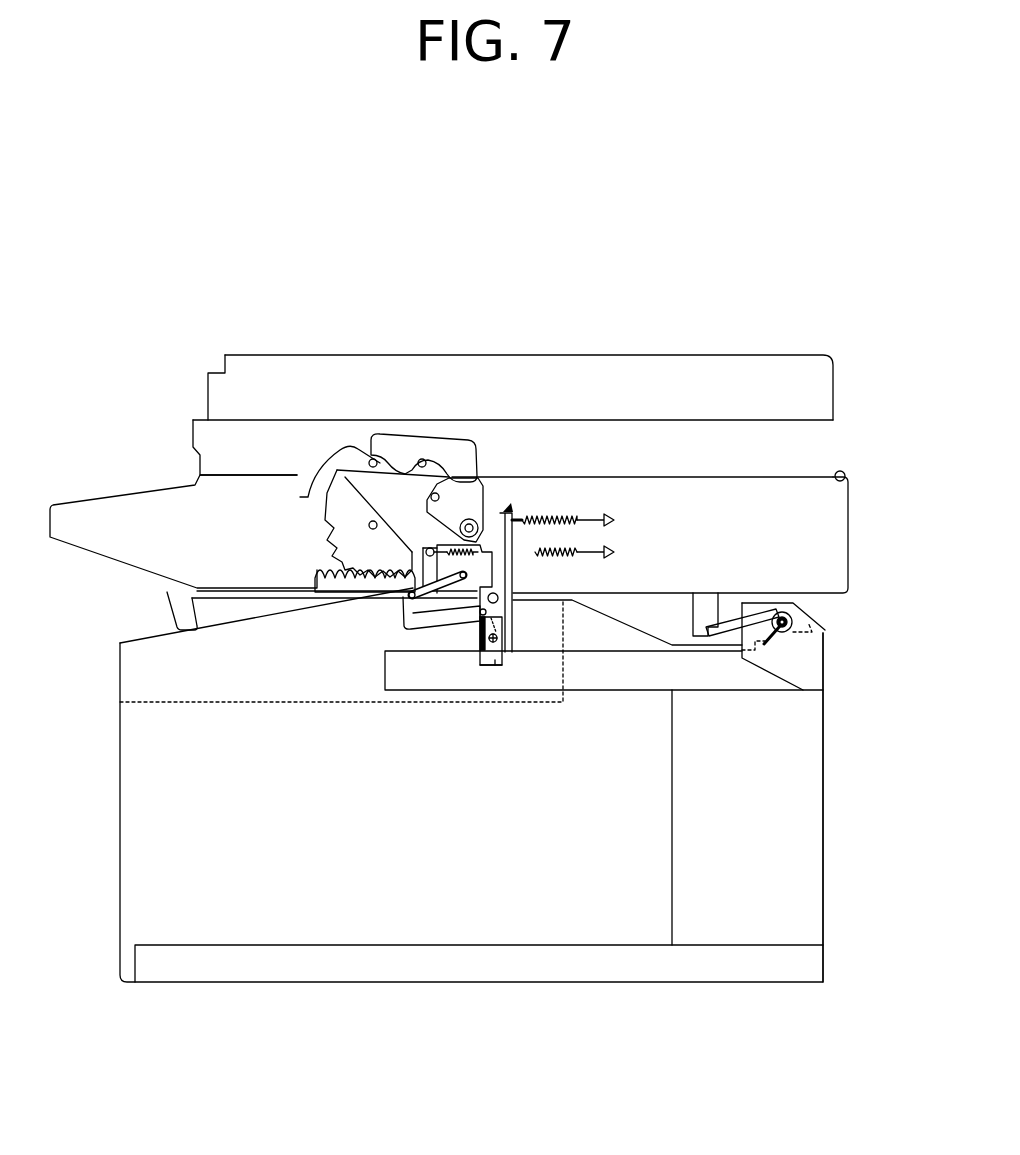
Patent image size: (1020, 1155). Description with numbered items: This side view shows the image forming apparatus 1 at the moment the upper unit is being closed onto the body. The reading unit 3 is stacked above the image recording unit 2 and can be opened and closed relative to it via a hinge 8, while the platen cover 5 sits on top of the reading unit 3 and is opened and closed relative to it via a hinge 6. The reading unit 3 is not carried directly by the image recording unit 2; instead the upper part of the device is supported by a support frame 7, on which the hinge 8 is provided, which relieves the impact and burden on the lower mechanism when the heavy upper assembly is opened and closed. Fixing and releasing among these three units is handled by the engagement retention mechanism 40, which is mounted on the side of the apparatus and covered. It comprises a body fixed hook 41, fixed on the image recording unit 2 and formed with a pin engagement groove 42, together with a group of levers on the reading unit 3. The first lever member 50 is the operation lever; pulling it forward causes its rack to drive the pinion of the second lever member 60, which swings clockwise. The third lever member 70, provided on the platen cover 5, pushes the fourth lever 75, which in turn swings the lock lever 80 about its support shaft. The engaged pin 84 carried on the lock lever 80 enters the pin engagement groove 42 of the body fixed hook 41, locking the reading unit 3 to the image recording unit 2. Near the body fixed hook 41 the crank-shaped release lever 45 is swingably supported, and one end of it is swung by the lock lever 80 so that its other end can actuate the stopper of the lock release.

The image forming apparatus 1 is at (622, 330).
The image recording unit 2 is at (431, 827).
The reading unit 3 is at (833, 542).
The platen cover 5 is at (540, 370).
The hinge 6 is at (845, 478).
The support frame 7 is at (805, 820).
The hinge 8 is at (807, 640).
The engagement retention mechanism 40 is at (302, 553).
The body fixed hook 41 is at (489, 664).
The pin engagement groove 42 is at (500, 658).
The release lever 45 is at (418, 627).
The first lever member 50 is at (333, 590).
The second lever member 60 is at (323, 492).
The third lever member 70 is at (424, 443).
The fourth lever 75 is at (473, 498).
The lock lever 80 is at (505, 565).
The engaged pin 84 is at (493, 640).